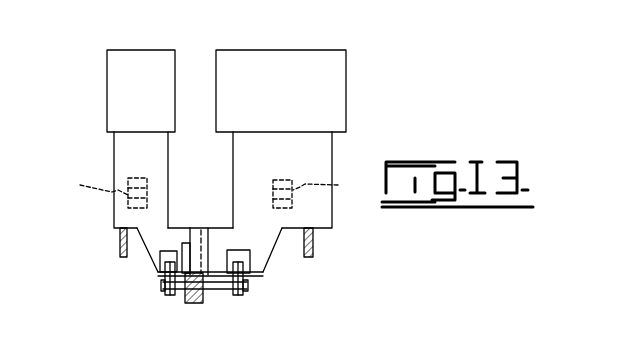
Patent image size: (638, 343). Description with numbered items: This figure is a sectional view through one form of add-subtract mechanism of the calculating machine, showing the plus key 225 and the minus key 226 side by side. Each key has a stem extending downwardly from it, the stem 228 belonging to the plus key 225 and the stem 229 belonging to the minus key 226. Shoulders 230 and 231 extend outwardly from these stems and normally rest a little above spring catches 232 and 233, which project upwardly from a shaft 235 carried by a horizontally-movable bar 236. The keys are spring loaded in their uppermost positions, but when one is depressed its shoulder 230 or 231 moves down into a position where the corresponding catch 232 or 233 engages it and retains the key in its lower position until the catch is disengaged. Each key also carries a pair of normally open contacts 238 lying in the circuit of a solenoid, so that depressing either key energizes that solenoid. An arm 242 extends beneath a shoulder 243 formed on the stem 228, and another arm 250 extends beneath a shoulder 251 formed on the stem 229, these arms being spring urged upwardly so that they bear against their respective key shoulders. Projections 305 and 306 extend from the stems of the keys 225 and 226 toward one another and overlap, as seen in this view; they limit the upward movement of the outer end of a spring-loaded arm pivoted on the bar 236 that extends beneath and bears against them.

The plus key 225 is at (274, 62).
The minus key 226 is at (113, 65).
The stem 228 is at (323, 147).
The stem 229 is at (130, 149).
The shoulder 230 is at (245, 256).
The shoulder 231 is at (163, 260).
The spring catch 232 is at (248, 285).
The spring catch 233 is at (167, 275).
The shaft 235 is at (243, 292).
The horizontally-movable bar 236 is at (183, 300).
The normally open contacts 238 is at (209, 192).
The arm 242 is at (313, 248).
The shoulder 243 is at (332, 233).
The arm 250 is at (120, 247).
The shoulder 251 is at (118, 232).
The projection 305 is at (220, 232).
The projection 306 is at (177, 240).